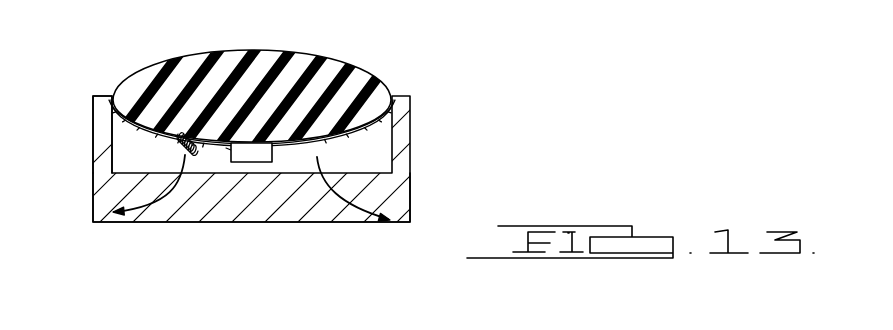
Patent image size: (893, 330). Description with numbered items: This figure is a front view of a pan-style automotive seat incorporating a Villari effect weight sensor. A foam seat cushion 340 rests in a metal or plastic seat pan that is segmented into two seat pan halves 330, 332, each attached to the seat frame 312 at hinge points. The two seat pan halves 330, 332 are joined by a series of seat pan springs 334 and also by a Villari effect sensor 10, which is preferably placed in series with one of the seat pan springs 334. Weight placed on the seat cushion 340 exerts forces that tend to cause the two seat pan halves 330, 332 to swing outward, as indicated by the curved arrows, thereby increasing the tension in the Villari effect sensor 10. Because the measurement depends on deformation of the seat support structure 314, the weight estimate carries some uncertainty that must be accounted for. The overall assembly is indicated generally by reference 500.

The Villari effect sensor 10 is at (251, 165).
The seat frame 312 is at (401, 221).
The seat support structure 314 is at (415, 123).
The seat pan half 330 is at (367, 147).
The seat pan half 332 is at (130, 138).
The seat pan springs 334 is at (207, 153).
The foam seat cushion 340 is at (170, 53).
The wafer chuck assembly 500 is at (428, 58).